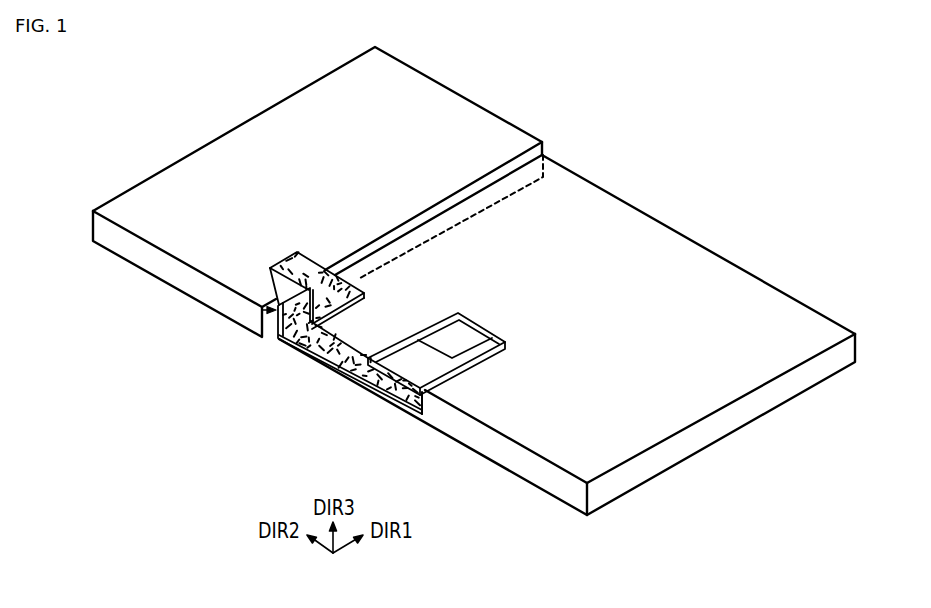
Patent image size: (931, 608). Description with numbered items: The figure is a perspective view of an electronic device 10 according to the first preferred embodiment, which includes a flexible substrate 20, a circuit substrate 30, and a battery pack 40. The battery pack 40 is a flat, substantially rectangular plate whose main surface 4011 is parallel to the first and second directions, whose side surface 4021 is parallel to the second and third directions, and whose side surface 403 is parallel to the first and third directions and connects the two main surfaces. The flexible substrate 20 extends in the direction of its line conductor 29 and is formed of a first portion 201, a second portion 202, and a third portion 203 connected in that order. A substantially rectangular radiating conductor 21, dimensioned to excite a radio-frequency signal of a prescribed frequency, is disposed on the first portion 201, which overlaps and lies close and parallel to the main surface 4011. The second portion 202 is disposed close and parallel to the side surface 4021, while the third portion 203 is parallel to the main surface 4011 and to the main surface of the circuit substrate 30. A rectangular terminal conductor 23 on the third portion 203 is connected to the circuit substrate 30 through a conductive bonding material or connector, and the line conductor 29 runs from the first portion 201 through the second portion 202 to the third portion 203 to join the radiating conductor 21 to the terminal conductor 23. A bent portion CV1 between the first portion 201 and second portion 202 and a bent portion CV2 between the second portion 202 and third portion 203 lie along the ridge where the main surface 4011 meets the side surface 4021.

The electronic device 10 is at (724, 81).
The circuit substrate 30 is at (455, 102).
The battery pack 40 is at (567, 337).
The main surface 4011 is at (793, 322).
The side surface 4021 is at (557, 485).
The side surface 403 is at (660, 462).
The flexible substrate 20 is at (284, 354).
The first portion 201 is at (365, 387).
The second portion 202 is at (330, 362).
The third portion 203 is at (284, 343).
The terminal conductor 23 is at (268, 271).
The line conductor 29 is at (350, 354).
The radiating conductor 21 is at (457, 340).
The bent portion CV1 is at (429, 396).
The bent portion CV2 is at (262, 312).